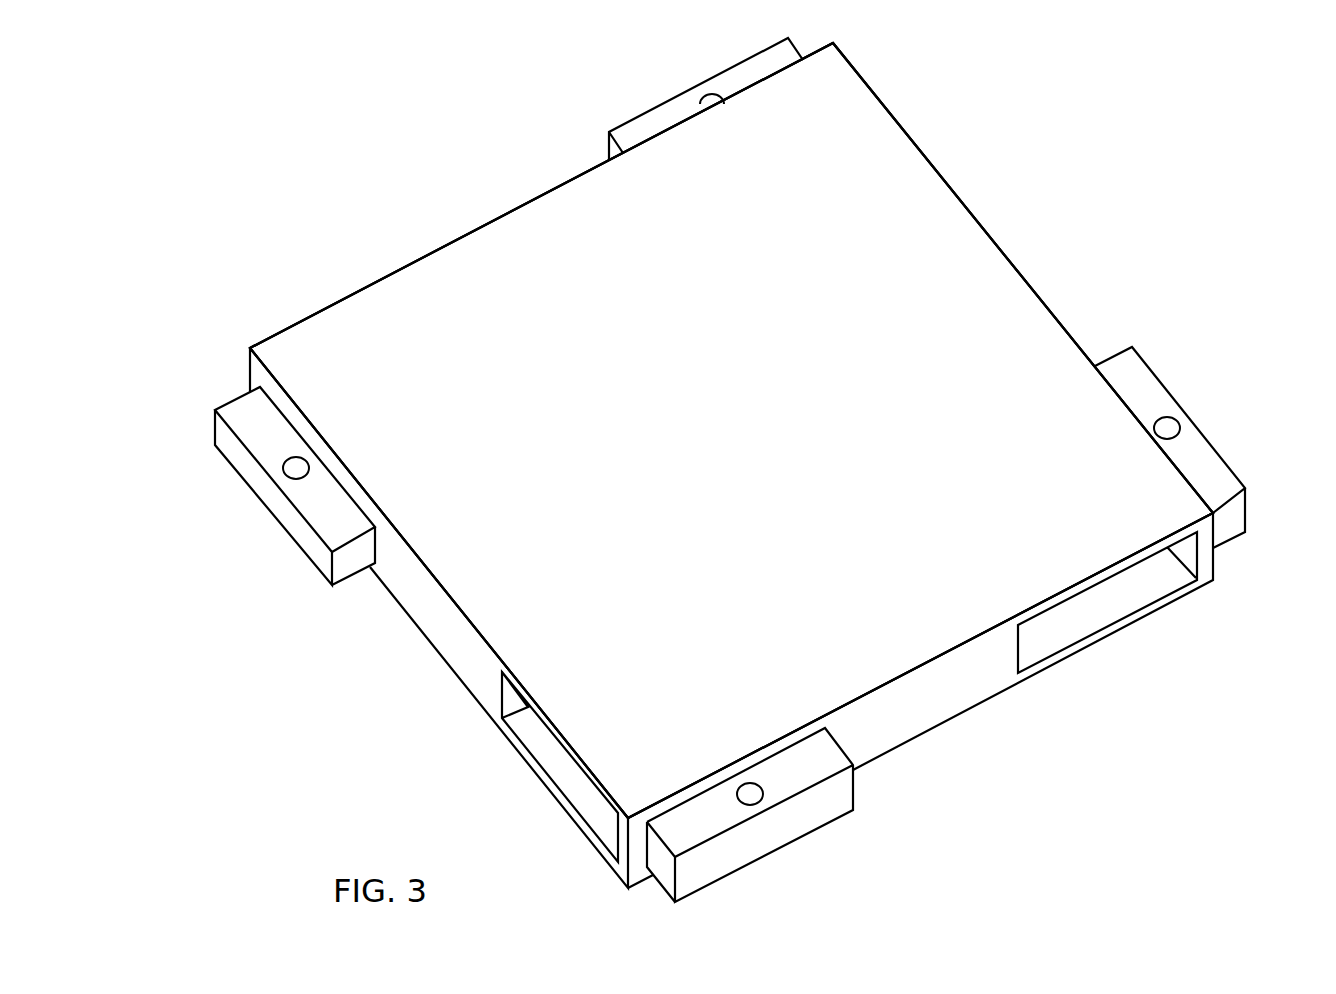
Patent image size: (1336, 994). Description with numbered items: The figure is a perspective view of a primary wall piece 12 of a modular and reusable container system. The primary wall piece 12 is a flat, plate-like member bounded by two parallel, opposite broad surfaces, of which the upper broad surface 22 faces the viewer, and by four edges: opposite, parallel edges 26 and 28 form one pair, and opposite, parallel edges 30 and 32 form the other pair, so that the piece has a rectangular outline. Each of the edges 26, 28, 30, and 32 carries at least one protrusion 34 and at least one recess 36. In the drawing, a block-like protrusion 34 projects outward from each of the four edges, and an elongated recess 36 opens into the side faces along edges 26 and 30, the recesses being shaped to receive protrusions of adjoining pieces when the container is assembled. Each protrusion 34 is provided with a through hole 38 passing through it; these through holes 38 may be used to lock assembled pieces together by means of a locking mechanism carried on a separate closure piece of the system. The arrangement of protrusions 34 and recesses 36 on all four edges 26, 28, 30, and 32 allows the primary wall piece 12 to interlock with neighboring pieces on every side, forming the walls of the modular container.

The primary wall piece 12 is at (233, 117).
The broad surface 22 is at (897, 185).
The edge 26 is at (985, 690).
The edge 28 is at (540, 192).
The edge 30 is at (450, 632).
The edge 32 is at (1030, 275).
The protrusion 34 is at (616, 125).
The recess 36 is at (548, 752).
The through hole 38 is at (712, 97).